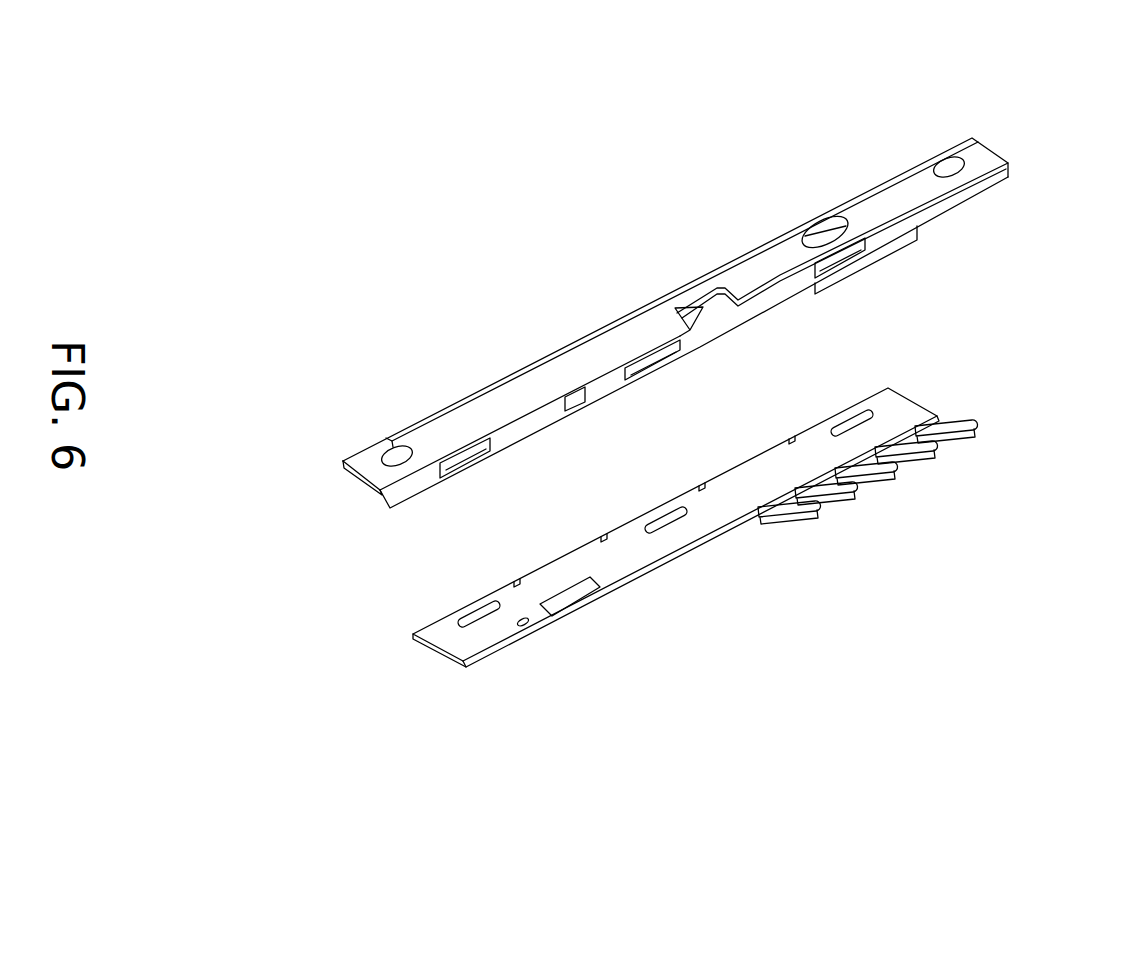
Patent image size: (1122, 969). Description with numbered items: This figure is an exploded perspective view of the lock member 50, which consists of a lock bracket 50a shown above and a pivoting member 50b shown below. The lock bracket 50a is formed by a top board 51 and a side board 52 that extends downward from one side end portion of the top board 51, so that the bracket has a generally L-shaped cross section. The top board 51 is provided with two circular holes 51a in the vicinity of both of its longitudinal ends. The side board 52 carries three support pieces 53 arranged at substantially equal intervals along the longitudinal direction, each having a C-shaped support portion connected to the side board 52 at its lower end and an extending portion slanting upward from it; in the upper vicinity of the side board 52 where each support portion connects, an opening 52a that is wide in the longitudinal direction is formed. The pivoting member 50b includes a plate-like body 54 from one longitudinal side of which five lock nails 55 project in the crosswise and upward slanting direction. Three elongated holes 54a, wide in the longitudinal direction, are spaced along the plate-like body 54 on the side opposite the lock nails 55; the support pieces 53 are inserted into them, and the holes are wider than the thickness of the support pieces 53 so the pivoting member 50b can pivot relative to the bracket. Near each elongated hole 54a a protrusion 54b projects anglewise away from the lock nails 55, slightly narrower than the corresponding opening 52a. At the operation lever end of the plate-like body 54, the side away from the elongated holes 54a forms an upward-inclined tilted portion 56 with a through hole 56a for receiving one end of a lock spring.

The lock member 50 is at (1053, 299).
The lock bracket 50a is at (932, 281).
The pivoting member 50b is at (944, 376).
The top board 51 is at (632, 323).
The circular holes 51a is at (399, 446).
The side board 52 is at (530, 437).
The opening 52a is at (716, 332).
The support pieces 53 is at (455, 478).
The plate-like body 54 is at (707, 522).
The elongated holes 54a is at (470, 610).
The protrusions 54b is at (518, 582).
The lock nails 55 is at (828, 507).
The tilted portion 56 is at (470, 670).
The through hole 56a is at (525, 632).